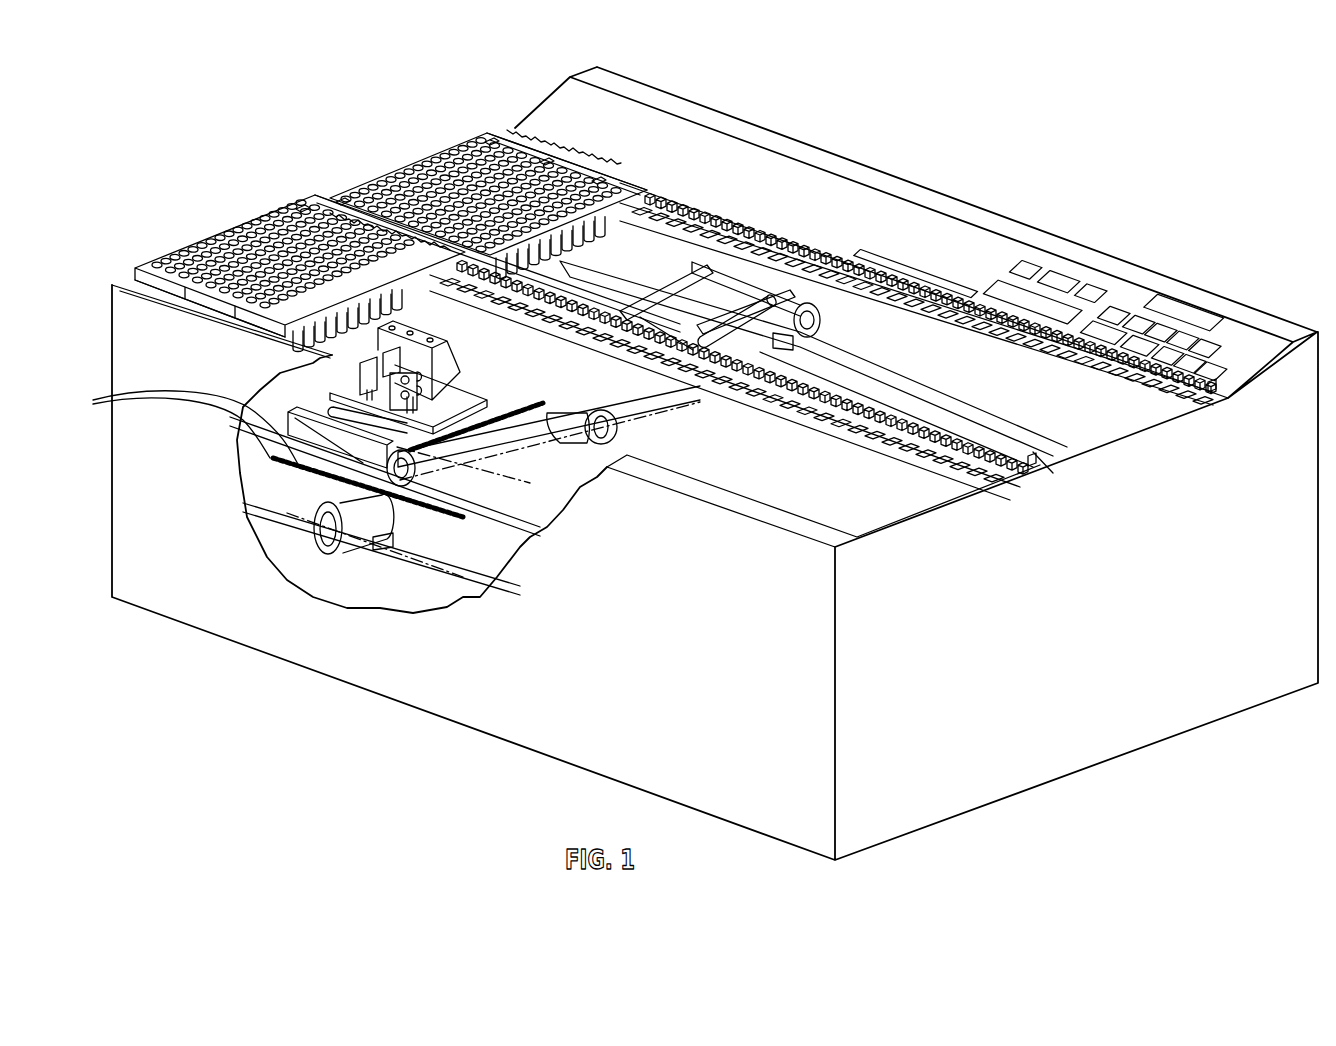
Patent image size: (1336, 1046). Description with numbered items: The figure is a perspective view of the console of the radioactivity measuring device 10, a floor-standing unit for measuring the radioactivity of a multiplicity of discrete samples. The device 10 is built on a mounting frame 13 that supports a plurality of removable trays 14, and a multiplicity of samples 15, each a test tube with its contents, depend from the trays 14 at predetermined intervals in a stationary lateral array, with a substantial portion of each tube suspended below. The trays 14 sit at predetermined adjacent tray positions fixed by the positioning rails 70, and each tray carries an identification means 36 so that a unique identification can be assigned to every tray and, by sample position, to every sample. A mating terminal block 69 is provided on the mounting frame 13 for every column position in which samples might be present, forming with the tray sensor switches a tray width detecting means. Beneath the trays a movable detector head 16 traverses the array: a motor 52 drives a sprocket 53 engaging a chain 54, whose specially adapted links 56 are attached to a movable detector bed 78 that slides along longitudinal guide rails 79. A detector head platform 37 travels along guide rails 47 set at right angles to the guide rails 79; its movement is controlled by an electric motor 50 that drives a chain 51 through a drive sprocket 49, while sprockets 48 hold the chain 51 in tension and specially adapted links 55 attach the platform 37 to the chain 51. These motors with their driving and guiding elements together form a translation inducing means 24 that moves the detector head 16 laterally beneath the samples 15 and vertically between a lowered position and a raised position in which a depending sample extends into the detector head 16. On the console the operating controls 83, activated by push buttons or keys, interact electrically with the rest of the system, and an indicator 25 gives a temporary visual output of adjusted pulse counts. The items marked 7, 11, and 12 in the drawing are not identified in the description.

The section line 7 is at (982, 487).
The radioactivity measuring device 10 is at (947, 175).
The front ledge of housing 11 is at (765, 513).
The sloped control panel 12 is at (676, 148).
The mounting frame 13 is at (115, 284).
The removable trays 14 is at (150, 266).
The samples 15 is at (333, 322).
The movable detector head 16 is at (420, 324).
The translation inducing means 24 is at (523, 482).
The indicator 25 is at (1180, 308).
The identification means 36 is at (340, 200).
The detector head platform 37 is at (350, 394).
The guide rails 47 is at (712, 305).
The sprockets 48 is at (812, 322).
The drive sprocket 49 is at (617, 428).
The electric motor 50 is at (570, 437).
The chain 51 is at (697, 395).
The motor 52 is at (383, 545).
The sprocket 53 is at (340, 556).
The chain 54 is at (290, 455).
The specially adapted links 55 is at (495, 420).
The specially adapted links 56 is at (178, 428).
The mating terminal block 69 is at (1183, 407).
The positioning rails 70 is at (1215, 390).
The movable detector bed 78 is at (698, 330).
The longitudinal guide rails 79 is at (863, 370).
The operating controls 83 is at (1048, 267).